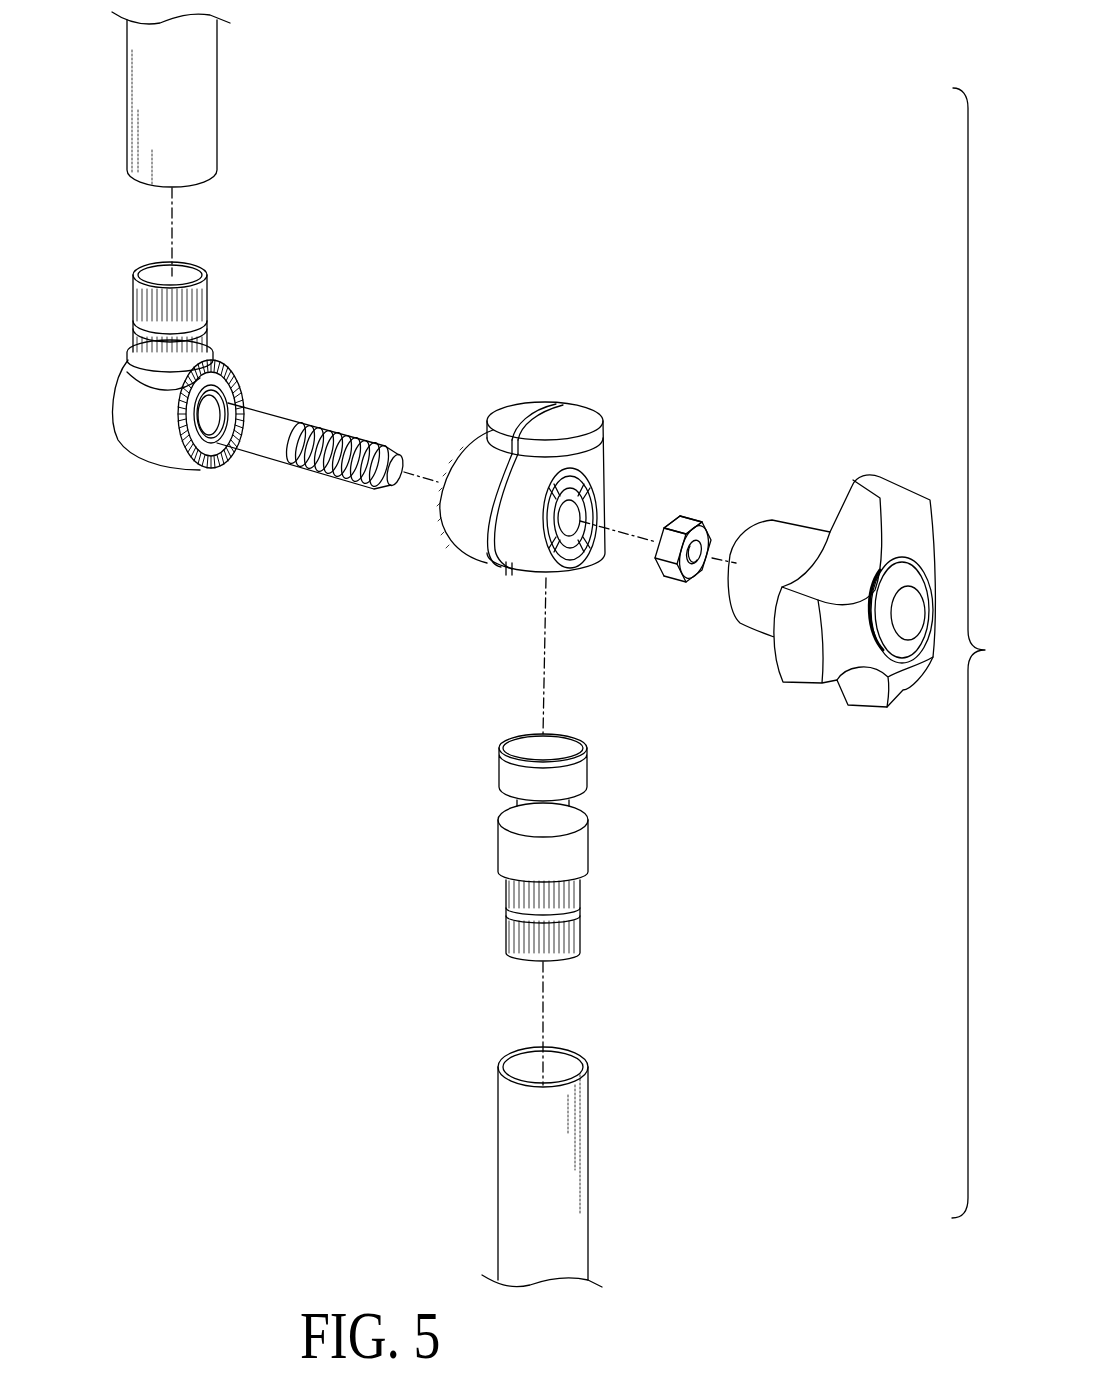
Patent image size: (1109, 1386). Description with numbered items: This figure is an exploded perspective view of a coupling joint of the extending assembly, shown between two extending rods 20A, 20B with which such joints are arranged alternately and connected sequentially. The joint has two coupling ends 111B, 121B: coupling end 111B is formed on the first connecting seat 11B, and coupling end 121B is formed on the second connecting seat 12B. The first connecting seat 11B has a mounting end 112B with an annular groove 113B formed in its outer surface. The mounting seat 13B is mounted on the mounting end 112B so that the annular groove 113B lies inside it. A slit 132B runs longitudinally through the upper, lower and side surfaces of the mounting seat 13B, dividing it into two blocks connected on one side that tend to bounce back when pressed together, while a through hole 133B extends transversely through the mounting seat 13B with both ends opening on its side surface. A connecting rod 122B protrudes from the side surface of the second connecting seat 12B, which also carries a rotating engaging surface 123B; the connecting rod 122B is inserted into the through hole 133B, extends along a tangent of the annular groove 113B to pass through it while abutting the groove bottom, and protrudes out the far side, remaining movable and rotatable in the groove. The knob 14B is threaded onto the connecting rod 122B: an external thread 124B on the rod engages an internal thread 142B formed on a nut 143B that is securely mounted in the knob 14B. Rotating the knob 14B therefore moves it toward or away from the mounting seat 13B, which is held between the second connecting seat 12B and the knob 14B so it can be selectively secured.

The extending rod 20B is at (202, 90).
The extending rod 20A is at (572, 1193).
The second connecting seat 12B is at (158, 447).
The coupling end 121B is at (203, 302).
The connecting rod 122B is at (272, 442).
The rotating engaging surface 123B is at (238, 377).
The external thread 124B is at (347, 467).
The mounting seat 13B is at (540, 446).
The slit 132B is at (488, 540).
The through hole 133B is at (573, 512).
The internal thread 142B is at (685, 547).
The nut 143B is at (683, 523).
The knob 14B is at (797, 672).
The first connecting seat 11B is at (537, 847).
The mounting end 112B is at (580, 772).
The annular groove 113B is at (563, 813).
The coupling end 111B is at (573, 928).